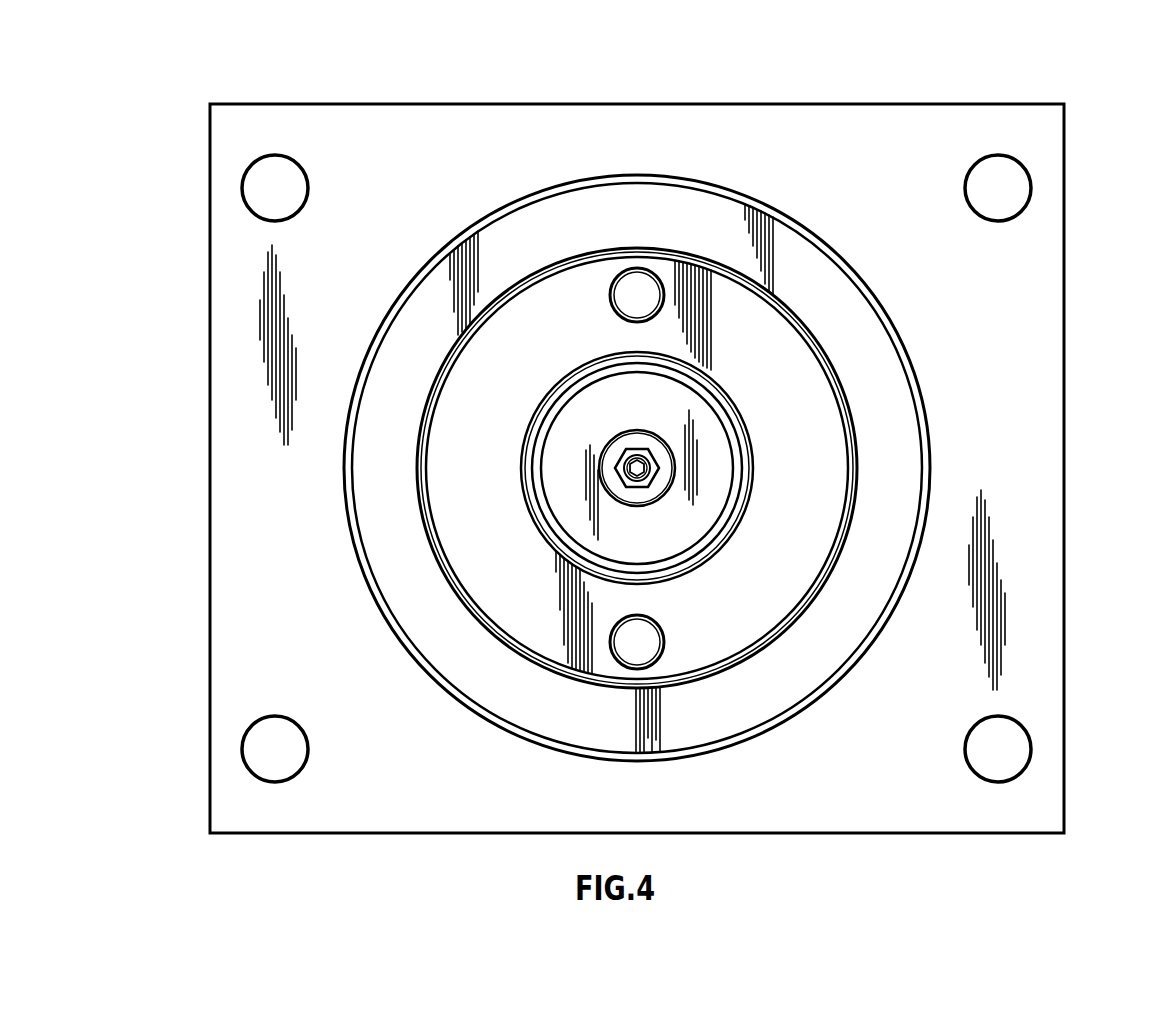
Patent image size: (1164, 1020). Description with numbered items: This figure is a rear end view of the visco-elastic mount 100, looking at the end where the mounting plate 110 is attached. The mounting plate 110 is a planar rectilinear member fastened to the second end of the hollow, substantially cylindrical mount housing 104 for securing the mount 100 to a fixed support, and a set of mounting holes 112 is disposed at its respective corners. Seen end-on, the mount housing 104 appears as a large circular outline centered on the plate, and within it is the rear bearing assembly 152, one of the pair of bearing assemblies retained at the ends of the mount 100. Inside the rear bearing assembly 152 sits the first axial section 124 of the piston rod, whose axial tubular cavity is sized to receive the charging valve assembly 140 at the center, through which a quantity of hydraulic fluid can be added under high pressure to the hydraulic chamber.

The visco-elastic mount 100 is at (180, 93).
The mounting plate 110 is at (846, 104).
The mounting holes 112 is at (258, 193).
The mount housing 104 is at (675, 215).
The rear bearing assembly 152 is at (537, 618).
The first axial section 124 is at (683, 525).
The charging valve assembly 140 is at (630, 453).